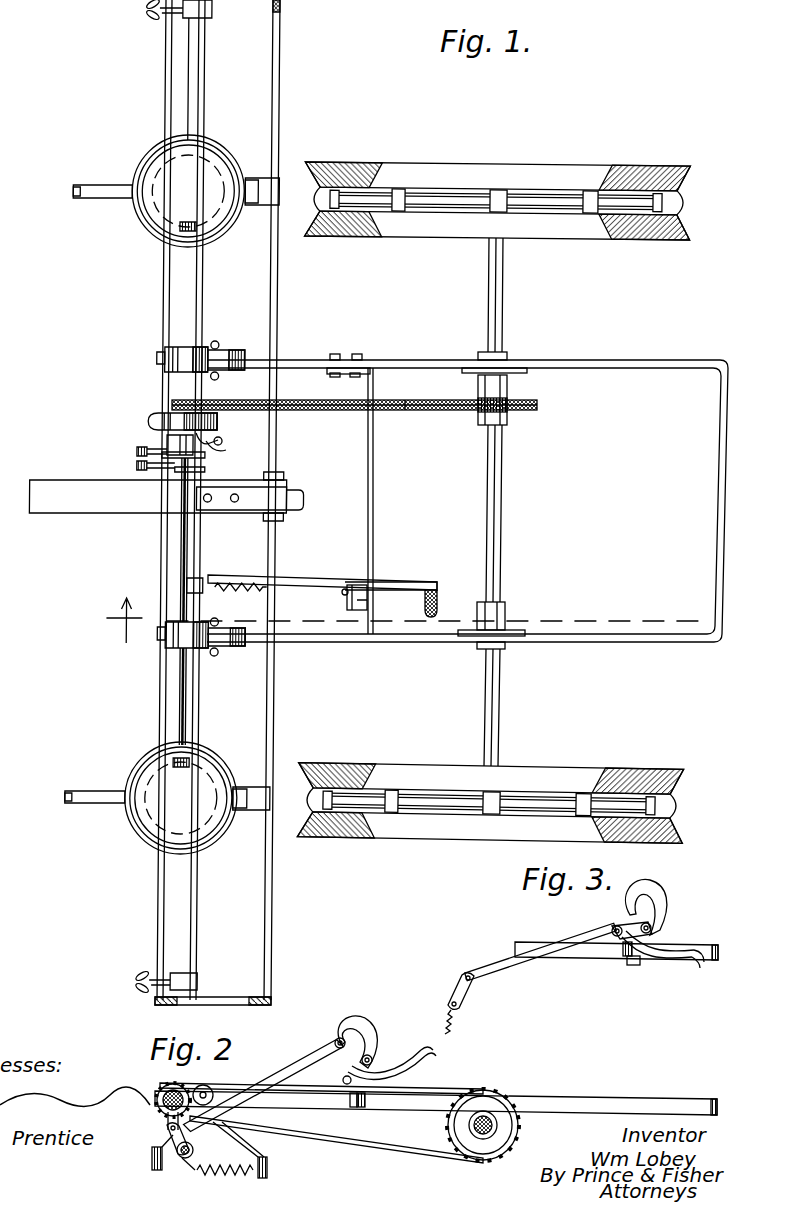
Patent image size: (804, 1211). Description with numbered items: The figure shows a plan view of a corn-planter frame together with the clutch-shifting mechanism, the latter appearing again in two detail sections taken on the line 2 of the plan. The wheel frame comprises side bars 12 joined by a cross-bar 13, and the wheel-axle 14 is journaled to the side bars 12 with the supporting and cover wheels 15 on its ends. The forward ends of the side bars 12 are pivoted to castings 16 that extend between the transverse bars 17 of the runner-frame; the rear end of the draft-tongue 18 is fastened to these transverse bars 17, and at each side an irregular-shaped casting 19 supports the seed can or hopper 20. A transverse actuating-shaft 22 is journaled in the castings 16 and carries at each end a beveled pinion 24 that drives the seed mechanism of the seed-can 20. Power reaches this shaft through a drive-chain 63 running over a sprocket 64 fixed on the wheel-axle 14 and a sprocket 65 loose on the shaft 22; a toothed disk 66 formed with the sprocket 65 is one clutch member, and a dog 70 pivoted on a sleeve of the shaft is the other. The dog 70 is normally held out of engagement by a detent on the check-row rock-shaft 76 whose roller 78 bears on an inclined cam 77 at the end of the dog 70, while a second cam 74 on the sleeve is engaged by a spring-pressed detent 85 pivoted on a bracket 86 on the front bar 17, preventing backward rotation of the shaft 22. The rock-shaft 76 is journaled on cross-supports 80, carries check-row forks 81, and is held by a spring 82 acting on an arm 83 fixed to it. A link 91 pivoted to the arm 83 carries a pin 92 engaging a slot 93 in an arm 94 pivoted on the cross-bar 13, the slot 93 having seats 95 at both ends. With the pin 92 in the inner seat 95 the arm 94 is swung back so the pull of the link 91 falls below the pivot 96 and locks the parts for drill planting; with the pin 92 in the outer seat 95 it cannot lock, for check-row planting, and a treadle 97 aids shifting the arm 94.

In FIG. 1, the section line 2 2 is at (404, 622).
In FIG. 1, the side bars 12 is at (408, 360).
In FIG. 3, the side bars 12 is at (540, 942).
In FIG. 2, the side bars 12 is at (540, 1100).
In FIG. 1, the cross-bar 13 is at (374, 485).
In FIG. 3, the cross-bar 13 is at (628, 964).
In FIG. 2, the cross-bar 13 is at (365, 1103).
In FIG. 1, the wheel-axle 14 is at (502, 516).
In FIG. 2, the wheel-axle 14 is at (497, 1126).
In FIG. 1, the supporting and cover wheels 15 is at (426, 176).
In FIG. 1, the castings 16 is at (246, 350).
In FIG. 2, the castings 16 is at (256, 1148).
In FIG. 1, the transverse bars 17 is at (166, 322).
In FIG. 2, the transverse bars 17 is at (152, 1162).
In FIG. 1, the draft-tongue 18 is at (100, 500).
In FIG. 1, the irregular-shaped casting 19 is at (257, 178).
In FIG. 1, the seed can or hopper 20 is at (184, 494).
In FIG. 1, the actuating-shaft 22 is at (186, 553).
In FIG. 2, the actuating-shaft 22 is at (170, 1112).
In FIG. 1, the beveled pinion 24 is at (215, 240).
In FIG. 1, the drive-chain 63 is at (406, 410).
In FIG. 2, the drive-chain 63 is at (398, 1152).
In FIG. 1, the sprocket 64 is at (538, 408).
In FIG. 2, the sprocket 64 is at (484, 1093).
In FIG. 1, the sprocket 65 is at (172, 403).
In FIG. 2, the sprocket 65 is at (156, 1100).
In FIG. 1, the disk 66 is at (154, 420).
In FIG. 1, the dog 70 is at (220, 441).
In FIG. 1, the disk or cam 74 is at (171, 445).
In FIG. 1, the check-row rock-shaft 76 is at (202, 693).
In FIG. 2, the check-row rock-shaft 76 is at (193, 1150).
In FIG. 1, the inclined cam 77 is at (218, 452).
In FIG. 1, the roller 78 is at (227, 443).
In FIG. 1, the cross-supports 80 is at (251, 0).
In FIG. 1, the check-row forks 81 is at (152, 15).
In FIG. 1, the spring 82 is at (240, 600).
In FIG. 3, the spring 82 is at (470, 1026).
In FIG. 2, the spring 82 is at (190, 1170).
In FIG. 1, the arm 83 is at (192, 586).
In FIG. 3, the arm 83 is at (471, 996).
In FIG. 2, the arm 83 is at (170, 1144).
In FIG. 1, the detent 85 is at (141, 451).
In FIG. 1, the bracket 86 is at (141, 466).
In FIG. 1, the link 91 is at (296, 578).
In FIG. 3, the link 91 is at (546, 962).
In FIG. 2, the link 91 is at (300, 1076).
In FIG. 1, the pin 92 is at (344, 594).
In FIG. 3, the pin 92 is at (616, 926).
In FIG. 2, the pin 92 is at (340, 1050).
In FIG. 3, the slot 93 is at (662, 906).
In FIG. 2, the slot 93 is at (368, 1042).
In FIG. 1, the arm 94 is at (388, 582).
In FIG. 3, the arm 94 is at (668, 942).
In FIG. 2, the arm 94 is at (382, 1076).
In FIG. 3, the seats 95 is at (648, 895).
In FIG. 2, the seats 95 is at (374, 1062).
In FIG. 3, the pivot 96 is at (614, 946).
In FIG. 2, the pivot 96 is at (347, 1086).
In FIG. 1, the treadle 97 is at (438, 601).
In FIG. 3, the treadle 97 is at (700, 968).
In FIG. 2, the treadle 97 is at (433, 1058).